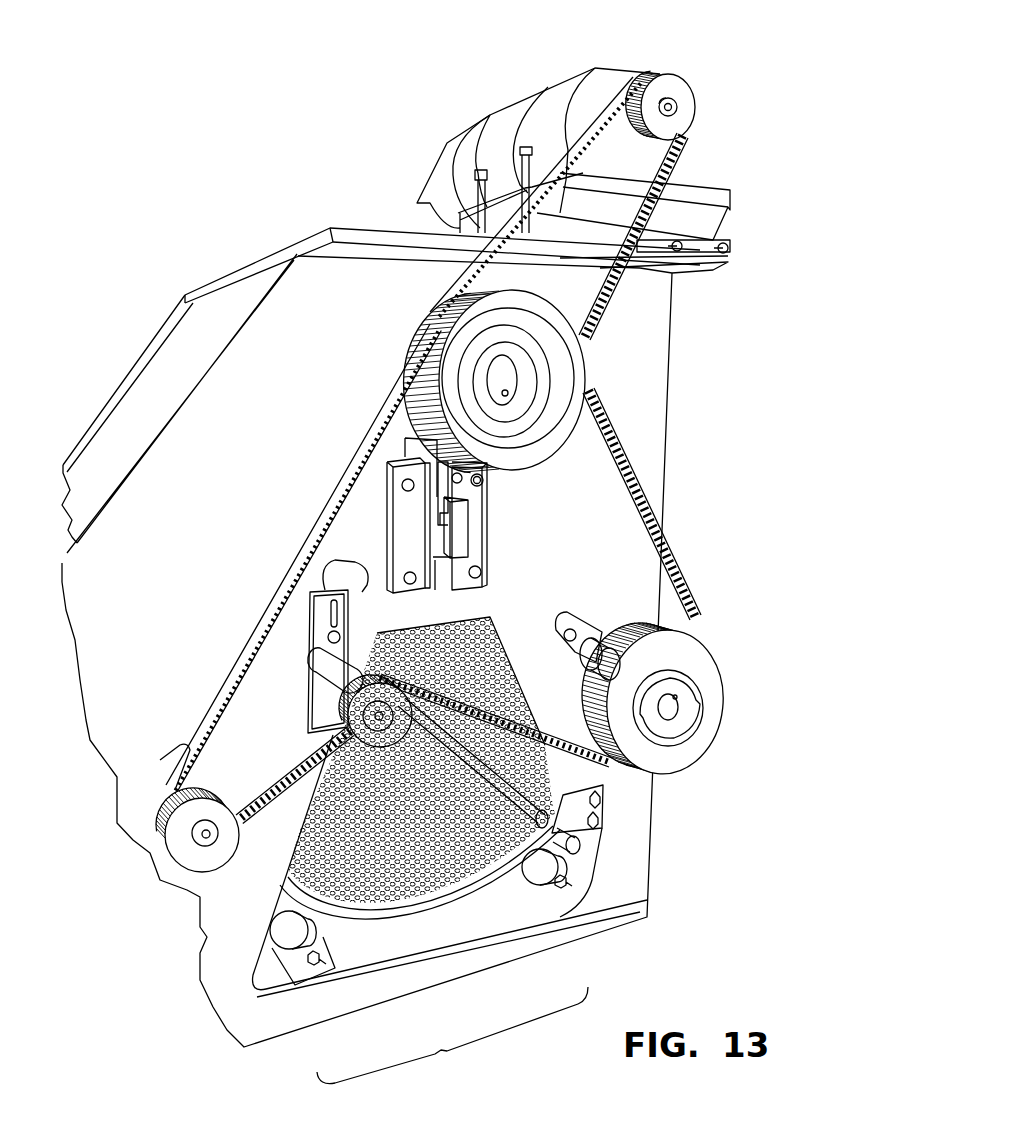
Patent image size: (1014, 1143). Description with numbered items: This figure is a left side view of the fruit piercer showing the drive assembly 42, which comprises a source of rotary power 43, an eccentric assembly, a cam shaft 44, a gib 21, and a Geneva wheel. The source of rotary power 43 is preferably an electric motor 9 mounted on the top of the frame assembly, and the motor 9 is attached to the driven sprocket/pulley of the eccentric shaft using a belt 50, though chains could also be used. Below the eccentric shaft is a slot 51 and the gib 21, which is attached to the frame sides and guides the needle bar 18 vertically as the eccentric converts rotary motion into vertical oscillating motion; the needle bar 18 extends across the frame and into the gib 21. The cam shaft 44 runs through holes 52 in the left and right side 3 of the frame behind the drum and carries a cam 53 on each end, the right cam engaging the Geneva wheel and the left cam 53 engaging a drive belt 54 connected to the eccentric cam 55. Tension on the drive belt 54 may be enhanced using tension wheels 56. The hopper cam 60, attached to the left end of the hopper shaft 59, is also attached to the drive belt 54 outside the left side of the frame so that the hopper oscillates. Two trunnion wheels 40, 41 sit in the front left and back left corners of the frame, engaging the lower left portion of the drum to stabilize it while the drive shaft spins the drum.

The right side 3 is at (168, 591).
The electric motor 9 is at (530, 115).
The needle bar 18 is at (462, 523).
The gib 21 is at (482, 541).
The first trunnion wheel 40 is at (318, 937).
The second trunnion wheel 41 is at (559, 868).
The drive assembly 42 is at (452, 1036).
The source of rotary power 43 is at (683, 128).
The cam shaft 44 is at (672, 709).
The belt 50 is at (640, 213).
The slot 51 is at (436, 584).
The holes 52 is at (572, 668).
The cam 53 is at (686, 701).
The drive belt 54 is at (630, 470).
The eccentric cam 55 is at (482, 333).
The tension wheels 56 is at (356, 722).
The hopper shaft 59 is at (193, 843).
The hopper cam 60 is at (137, 853).